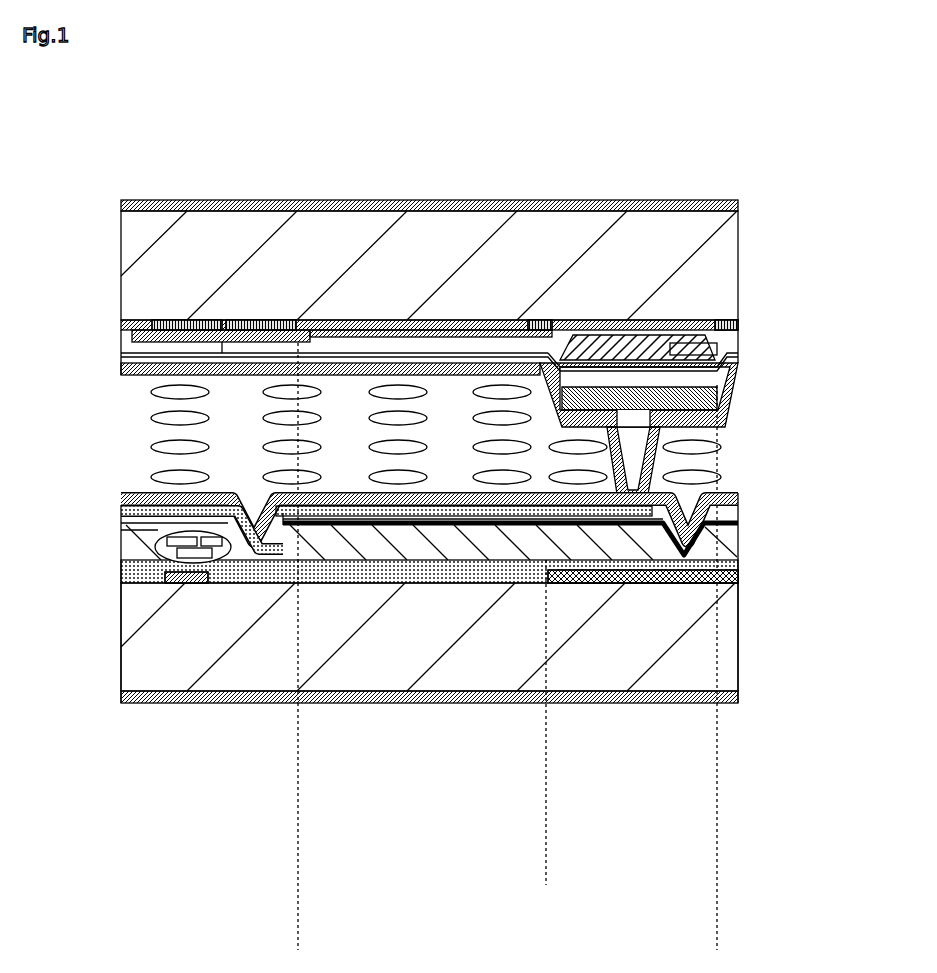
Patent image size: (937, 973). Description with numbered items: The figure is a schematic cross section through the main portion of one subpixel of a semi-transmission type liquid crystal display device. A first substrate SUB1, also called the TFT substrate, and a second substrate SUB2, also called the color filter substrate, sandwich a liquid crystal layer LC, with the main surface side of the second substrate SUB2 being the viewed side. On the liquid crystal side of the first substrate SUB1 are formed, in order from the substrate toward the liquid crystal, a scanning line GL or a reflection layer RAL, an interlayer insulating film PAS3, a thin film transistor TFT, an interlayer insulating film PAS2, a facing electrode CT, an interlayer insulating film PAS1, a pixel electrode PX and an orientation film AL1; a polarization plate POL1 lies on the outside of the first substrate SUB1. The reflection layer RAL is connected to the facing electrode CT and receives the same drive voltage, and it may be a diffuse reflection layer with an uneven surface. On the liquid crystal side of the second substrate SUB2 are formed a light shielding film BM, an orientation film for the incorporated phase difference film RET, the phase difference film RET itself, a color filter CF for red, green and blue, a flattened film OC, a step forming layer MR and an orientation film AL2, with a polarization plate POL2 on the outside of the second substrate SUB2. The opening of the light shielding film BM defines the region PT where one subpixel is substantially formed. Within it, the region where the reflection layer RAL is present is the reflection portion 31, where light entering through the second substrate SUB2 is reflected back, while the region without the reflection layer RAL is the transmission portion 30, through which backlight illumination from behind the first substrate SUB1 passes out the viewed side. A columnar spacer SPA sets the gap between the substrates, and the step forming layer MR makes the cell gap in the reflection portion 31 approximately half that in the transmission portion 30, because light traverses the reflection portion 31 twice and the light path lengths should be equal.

The polarization plate POL2 is at (450, 198).
The second substrate SUB2 is at (727, 273).
The light shielding film BM is at (225, 323).
The color filter CF is at (382, 337).
The flattened film OC is at (152, 353).
The orientation film AL2 is at (463, 367).
The incorporated phase difference film RET is at (655, 345).
The step forming layer MR is at (737, 385).
The spacer in columnar form SPA is at (630, 443).
The liquid crystal layer LC is at (697, 460).
The orientation film AL1 is at (717, 503).
The pixel electrode PX is at (303, 517).
The interlayer insulating film PAS2 is at (488, 547).
The facing electrode CT is at (438, 527).
The interlayer insulating film PAS1 is at (383, 523).
The interlayer insulating film PAS3 is at (537, 572).
The reflection layer RAL is at (660, 583).
The thin film transistor TFT is at (160, 557).
The scanning line GL is at (187, 584).
The first substrate SUB1 is at (717, 642).
The polarization plate POL1 is at (657, 700).
The transmission portion 30 is at (298, 855).
The reflection portion 31 is at (717, 855).
The region where one subpixel is substantially formed PT is at (717, 911).